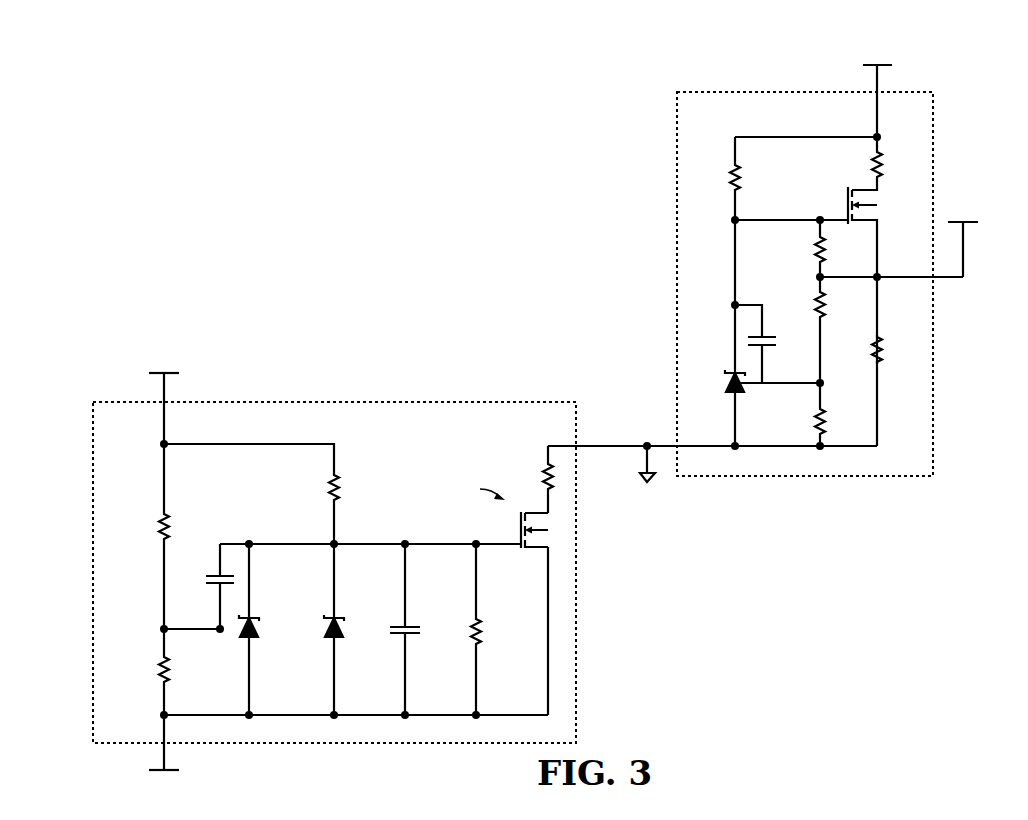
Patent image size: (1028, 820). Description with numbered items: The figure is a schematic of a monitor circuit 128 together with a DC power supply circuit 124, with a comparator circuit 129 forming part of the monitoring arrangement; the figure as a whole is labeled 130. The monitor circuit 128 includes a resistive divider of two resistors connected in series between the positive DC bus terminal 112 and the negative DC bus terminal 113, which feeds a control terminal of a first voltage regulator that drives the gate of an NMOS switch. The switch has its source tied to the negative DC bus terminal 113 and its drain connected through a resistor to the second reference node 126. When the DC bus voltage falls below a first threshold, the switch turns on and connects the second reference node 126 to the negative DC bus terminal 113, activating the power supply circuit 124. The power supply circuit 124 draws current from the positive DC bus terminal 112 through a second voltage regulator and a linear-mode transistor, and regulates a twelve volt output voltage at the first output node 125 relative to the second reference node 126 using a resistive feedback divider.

The power converter circuit 130 is at (193, 142).
The comparator circuit 129 is at (102, 482).
The monitor circuit 128 is at (334, 401).
The DC power supply circuit 124 is at (807, 92).
The positive DC bus terminal 112 is at (164, 387).
The negative DC bus terminal 113 is at (164, 760).
The first output node 125 is at (963, 237).
The second reference node 126 is at (634, 445).